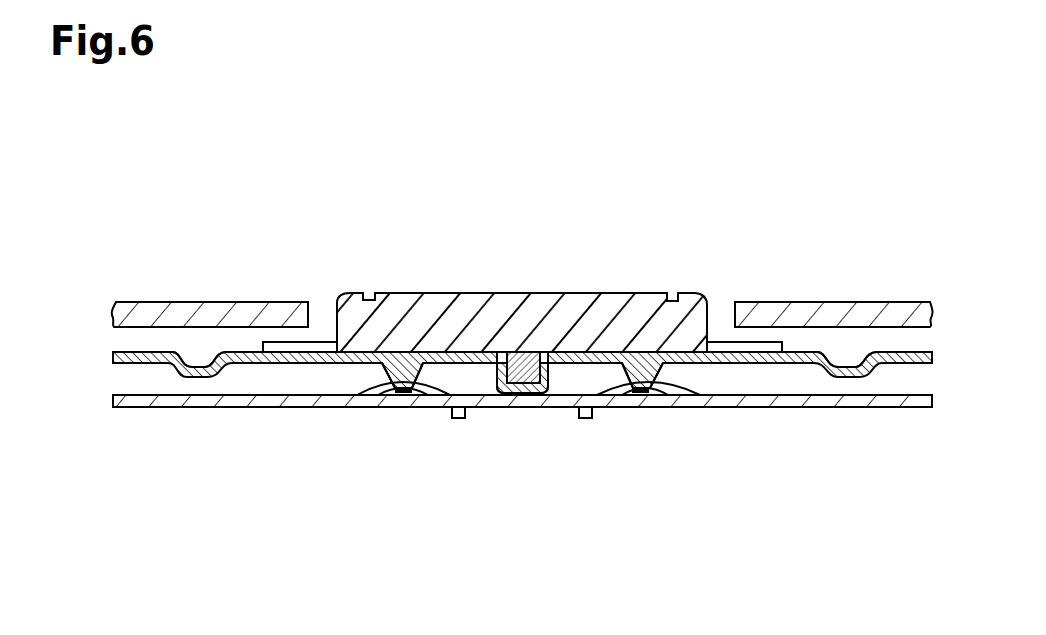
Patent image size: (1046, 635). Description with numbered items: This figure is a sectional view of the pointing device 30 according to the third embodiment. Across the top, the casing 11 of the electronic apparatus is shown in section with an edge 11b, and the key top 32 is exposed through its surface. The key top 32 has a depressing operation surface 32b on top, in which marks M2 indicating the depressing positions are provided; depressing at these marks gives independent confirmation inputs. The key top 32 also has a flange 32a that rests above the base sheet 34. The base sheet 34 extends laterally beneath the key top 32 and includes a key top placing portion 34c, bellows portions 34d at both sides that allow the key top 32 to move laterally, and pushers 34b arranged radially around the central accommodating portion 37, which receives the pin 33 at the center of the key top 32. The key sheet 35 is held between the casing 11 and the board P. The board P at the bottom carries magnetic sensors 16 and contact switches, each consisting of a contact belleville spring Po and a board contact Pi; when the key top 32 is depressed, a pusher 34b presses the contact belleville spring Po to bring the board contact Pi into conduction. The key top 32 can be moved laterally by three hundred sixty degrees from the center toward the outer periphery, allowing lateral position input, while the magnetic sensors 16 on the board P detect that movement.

The pointing device 30 is at (726, 183).
The casing 11 is at (239, 301).
The edge of board member 11b is at (310, 314).
The key top 32 is at (505, 292).
The flange of housing 32a is at (713, 341).
The depressing operation surface 32b is at (584, 292).
The marks M2 is at (372, 290).
The base sheet 34 is at (275, 364).
The pushers 34b is at (399, 393).
The key top placing portion 34c is at (442, 352).
The bellows portions 34d is at (197, 378).
The accommodating portion 37 is at (502, 394).
The pin 33 is at (522, 384).
The board P is at (140, 408).
The contact belleville spring Po is at (358, 389).
The board contact Pi is at (426, 393).
The magnetic sensors 16 is at (456, 419).
The key sheet 35 is at (883, 365).